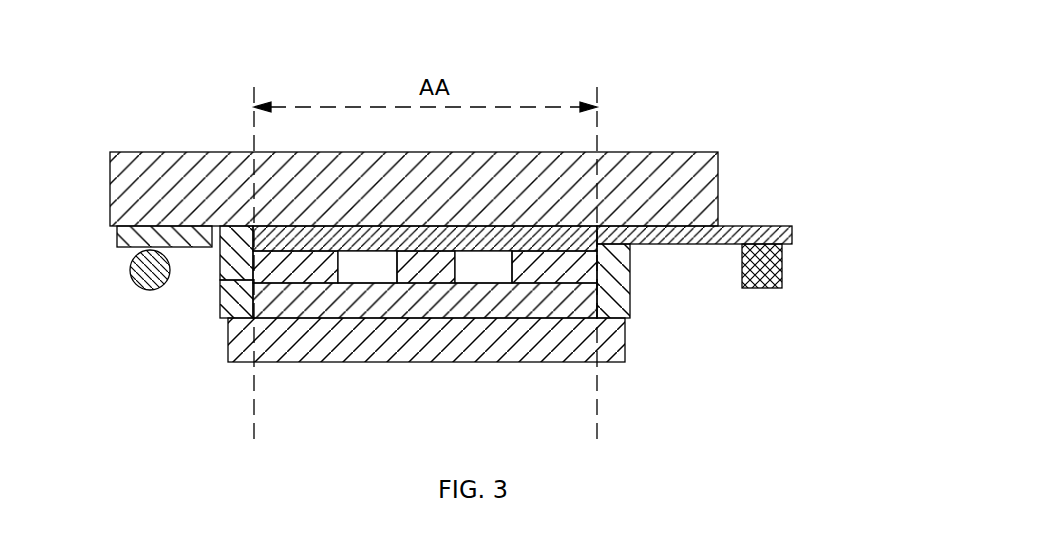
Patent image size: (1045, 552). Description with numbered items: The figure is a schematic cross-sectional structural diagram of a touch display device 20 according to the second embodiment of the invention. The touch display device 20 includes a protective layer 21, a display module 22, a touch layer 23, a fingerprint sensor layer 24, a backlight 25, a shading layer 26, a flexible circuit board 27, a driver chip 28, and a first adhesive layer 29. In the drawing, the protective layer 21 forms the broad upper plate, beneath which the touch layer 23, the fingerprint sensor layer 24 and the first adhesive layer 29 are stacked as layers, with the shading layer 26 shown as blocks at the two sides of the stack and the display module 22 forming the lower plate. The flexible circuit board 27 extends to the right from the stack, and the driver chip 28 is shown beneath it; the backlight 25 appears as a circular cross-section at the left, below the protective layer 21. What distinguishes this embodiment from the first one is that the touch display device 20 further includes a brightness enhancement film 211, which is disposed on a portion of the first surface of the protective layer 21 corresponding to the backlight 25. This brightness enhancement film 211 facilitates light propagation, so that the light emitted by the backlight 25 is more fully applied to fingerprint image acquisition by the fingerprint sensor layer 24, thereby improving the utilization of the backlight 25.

The touch display device 20 is at (703, 128).
The protective layer 21 is at (718, 156).
The brightness enhancement film 211 is at (117, 247).
The display module 22 is at (625, 344).
The touch layer 23 is at (275, 240).
The fingerprint sensor layer 24 is at (563, 250).
The backlight 25 is at (138, 291).
The shading layer 26 is at (240, 275).
The flexible circuit board 27 is at (765, 227).
The driver chip 28 is at (768, 264).
The first adhesive layer 29 is at (277, 304).